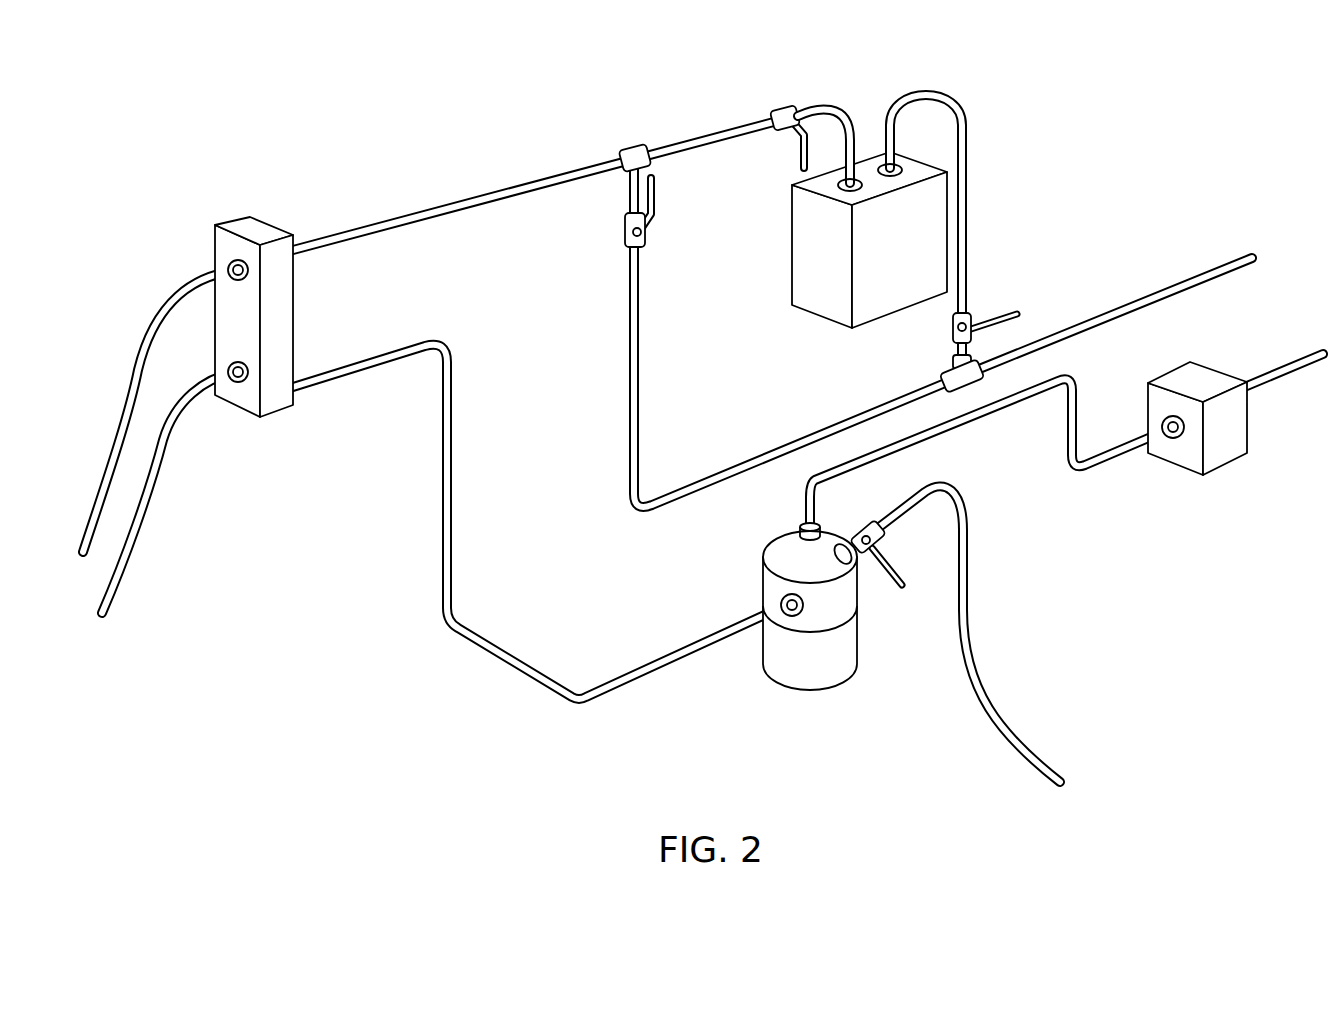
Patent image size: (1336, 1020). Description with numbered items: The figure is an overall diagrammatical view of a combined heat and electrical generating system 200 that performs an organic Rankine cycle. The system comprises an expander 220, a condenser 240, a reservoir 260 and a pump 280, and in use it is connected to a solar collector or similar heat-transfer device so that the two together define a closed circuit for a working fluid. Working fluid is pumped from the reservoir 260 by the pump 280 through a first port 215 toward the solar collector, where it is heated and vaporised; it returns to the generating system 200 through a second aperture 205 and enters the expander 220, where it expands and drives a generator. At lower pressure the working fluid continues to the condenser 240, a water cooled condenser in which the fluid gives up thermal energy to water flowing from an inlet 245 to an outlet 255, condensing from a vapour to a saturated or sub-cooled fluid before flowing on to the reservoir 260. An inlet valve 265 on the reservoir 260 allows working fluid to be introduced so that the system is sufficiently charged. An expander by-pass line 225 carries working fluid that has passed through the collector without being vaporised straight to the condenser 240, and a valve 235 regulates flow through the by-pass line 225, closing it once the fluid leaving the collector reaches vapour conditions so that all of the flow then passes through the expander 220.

The combined heat and electrical generating system 200 is at (333, 708).
The second aperture 205 is at (1252, 250).
The first port 215 is at (1322, 350).
The expander 220 is at (876, 283).
The expander by-pass line 225 is at (762, 462).
The valve 235 is at (646, 237).
The condenser 240 is at (263, 232).
The inlet 245 is at (226, 268).
The outlet 255 is at (232, 382).
The reservoir 260 is at (808, 667).
The inlet valve 265 is at (880, 536).
The pump 280 is at (1221, 440).